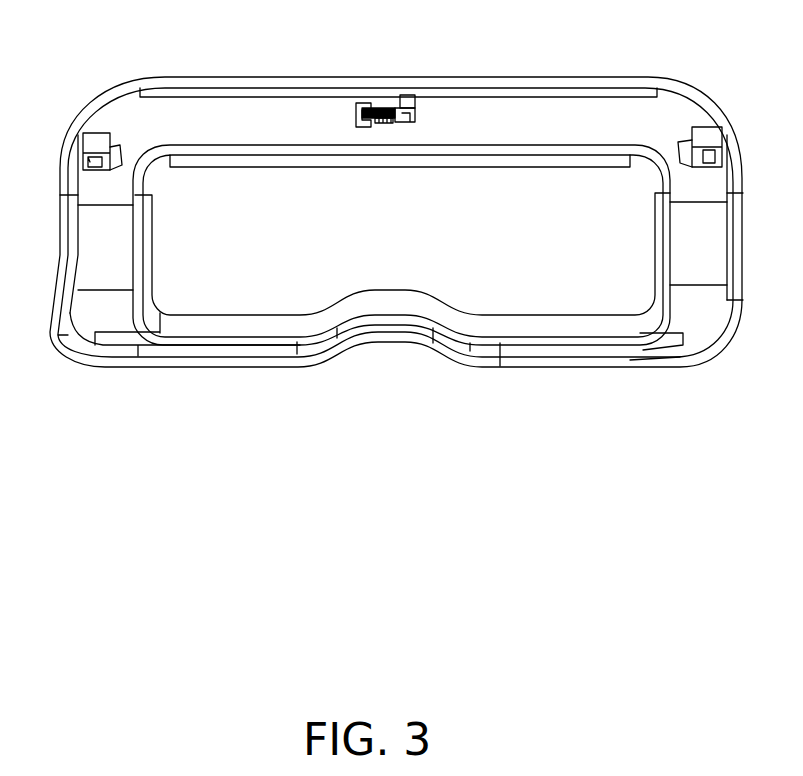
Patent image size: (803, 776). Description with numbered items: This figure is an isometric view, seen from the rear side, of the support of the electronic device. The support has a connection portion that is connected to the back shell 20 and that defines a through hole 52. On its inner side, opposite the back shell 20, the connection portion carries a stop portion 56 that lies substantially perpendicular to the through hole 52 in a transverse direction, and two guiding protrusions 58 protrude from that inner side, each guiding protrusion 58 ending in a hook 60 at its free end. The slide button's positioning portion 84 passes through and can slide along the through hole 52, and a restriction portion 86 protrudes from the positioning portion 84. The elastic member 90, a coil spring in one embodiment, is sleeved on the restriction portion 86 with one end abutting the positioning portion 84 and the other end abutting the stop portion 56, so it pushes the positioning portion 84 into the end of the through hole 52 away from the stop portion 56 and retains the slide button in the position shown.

The back shell 20 is at (153, 85).
The through hole 52 is at (398, 119).
The stop portion 56 is at (356, 113).
The guiding protrusion 58 is at (103, 167).
The hook 60 is at (97, 140).
The positioning portion 84 is at (413, 100).
The restriction portion 86 is at (396, 110).
The elastic member 90 is at (366, 108).